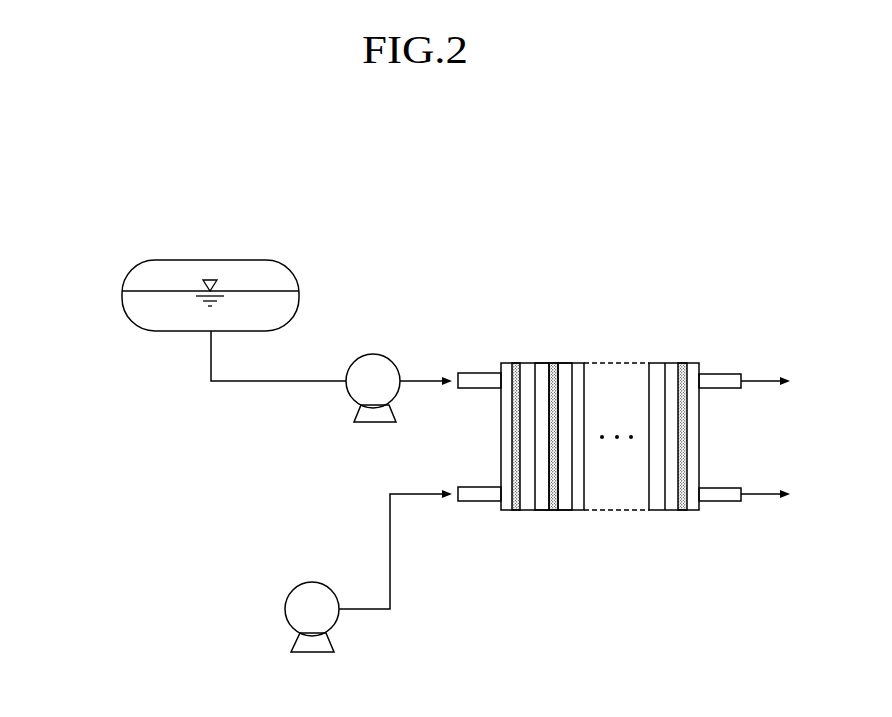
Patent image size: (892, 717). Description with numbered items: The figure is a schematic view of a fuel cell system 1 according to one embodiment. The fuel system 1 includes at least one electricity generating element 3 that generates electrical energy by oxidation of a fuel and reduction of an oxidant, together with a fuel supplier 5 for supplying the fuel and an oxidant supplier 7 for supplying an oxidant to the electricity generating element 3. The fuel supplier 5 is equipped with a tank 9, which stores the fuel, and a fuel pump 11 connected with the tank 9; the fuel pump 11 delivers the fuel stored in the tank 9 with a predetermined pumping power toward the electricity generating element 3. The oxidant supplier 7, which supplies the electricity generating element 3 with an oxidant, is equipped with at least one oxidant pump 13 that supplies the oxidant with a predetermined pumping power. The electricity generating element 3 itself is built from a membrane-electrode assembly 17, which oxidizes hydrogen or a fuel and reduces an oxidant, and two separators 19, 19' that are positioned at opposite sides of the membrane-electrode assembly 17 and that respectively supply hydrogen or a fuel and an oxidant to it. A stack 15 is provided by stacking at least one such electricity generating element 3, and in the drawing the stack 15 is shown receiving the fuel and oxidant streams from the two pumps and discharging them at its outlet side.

The fuel cell system 1 is at (624, 404).
The electricity generating element 3 is at (557, 502).
The fuel supplier 5 is at (111, 281).
The oxidant supplier 7 is at (327, 571).
The tank 9 is at (213, 260).
The fuel pump 11 is at (373, 354).
The oxidant pump 13 is at (297, 586).
The stack 15 is at (597, 464).
The membrane-electrode assembly 17 is at (553, 511).
The separator 19 is at (522, 478).
The separator 19' is at (588, 478).